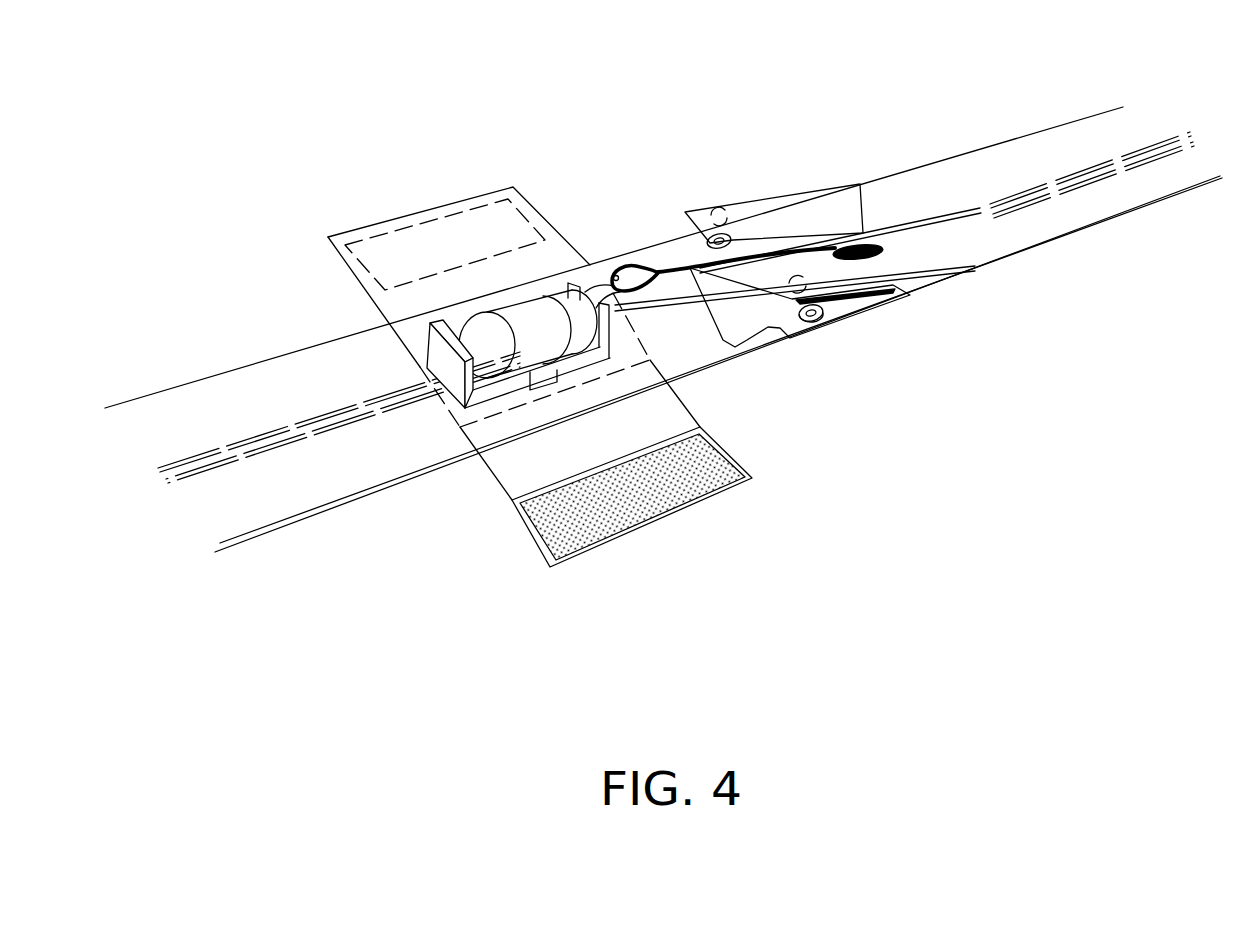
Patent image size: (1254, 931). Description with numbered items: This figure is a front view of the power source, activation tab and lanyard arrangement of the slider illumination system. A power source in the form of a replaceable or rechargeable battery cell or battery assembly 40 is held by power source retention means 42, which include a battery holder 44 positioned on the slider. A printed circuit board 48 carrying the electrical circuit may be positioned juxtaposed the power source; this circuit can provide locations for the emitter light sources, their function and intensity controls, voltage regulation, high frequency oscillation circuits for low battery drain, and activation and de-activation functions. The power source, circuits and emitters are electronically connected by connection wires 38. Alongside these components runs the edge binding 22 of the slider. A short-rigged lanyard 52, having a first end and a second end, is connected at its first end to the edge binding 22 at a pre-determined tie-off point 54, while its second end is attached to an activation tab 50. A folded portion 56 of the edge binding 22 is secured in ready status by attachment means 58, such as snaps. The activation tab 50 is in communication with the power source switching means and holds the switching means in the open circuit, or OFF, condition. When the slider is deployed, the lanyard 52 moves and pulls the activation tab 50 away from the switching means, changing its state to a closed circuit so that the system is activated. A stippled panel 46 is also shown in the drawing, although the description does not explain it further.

The edge binding 22 is at (1057, 240).
The connection wires 38 is at (1133, 163).
The battery assembly 40 is at (478, 322).
The power source retention means 42 is at (427, 368).
The battery holder 44 is at (518, 303).
The grille 46 is at (540, 508).
The printed circuit board 48 is at (583, 382).
The activation tab 50 is at (603, 268).
The short-rigged lanyard 52 is at (792, 337).
The pre-determined tie-off point 54 is at (868, 250).
The folded portion 56 is at (762, 214).
The attachment means 58 is at (818, 322).